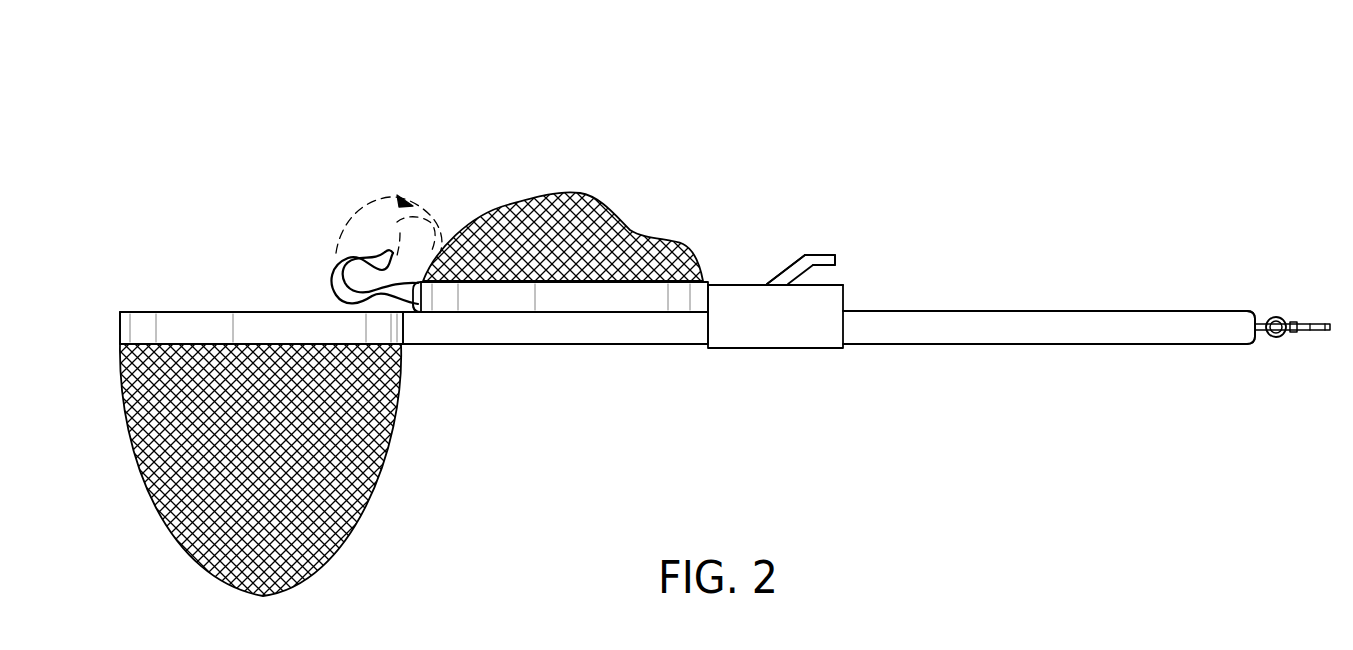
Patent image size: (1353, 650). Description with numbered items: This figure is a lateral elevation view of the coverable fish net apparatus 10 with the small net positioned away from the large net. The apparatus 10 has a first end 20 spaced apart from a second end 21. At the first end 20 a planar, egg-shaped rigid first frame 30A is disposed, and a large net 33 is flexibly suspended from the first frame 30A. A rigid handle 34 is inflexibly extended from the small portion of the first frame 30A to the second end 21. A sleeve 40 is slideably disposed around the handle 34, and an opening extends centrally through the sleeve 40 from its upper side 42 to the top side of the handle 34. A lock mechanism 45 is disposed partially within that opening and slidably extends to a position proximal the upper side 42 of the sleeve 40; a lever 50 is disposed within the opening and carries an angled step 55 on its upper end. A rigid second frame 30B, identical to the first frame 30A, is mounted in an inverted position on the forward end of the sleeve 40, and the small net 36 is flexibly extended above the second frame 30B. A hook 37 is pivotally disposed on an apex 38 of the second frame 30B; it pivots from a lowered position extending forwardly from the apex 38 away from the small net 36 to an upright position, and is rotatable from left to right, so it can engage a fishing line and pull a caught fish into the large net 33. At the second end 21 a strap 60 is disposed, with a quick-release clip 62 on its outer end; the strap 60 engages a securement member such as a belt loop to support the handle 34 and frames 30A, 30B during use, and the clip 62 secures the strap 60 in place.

The coverable fish net apparatus 10 is at (578, 120).
The first end 20 is at (107, 358).
The second end 21 is at (1252, 292).
The first frame 30A is at (268, 322).
The second frame 30B is at (485, 294).
The large net 33 is at (340, 508).
The handle 34 is at (1003, 311).
The small net 36 is at (626, 235).
The hook 37 is at (342, 274).
The apex 38 is at (414, 313).
The sleeve 40 is at (781, 349).
The upper side 42 is at (741, 285).
The lock mechanism 45 is at (797, 240).
The lever 50 is at (787, 270).
The angled step 55 is at (822, 255).
The strap 60 is at (1318, 334).
The quick-release clip 62 is at (1278, 337).